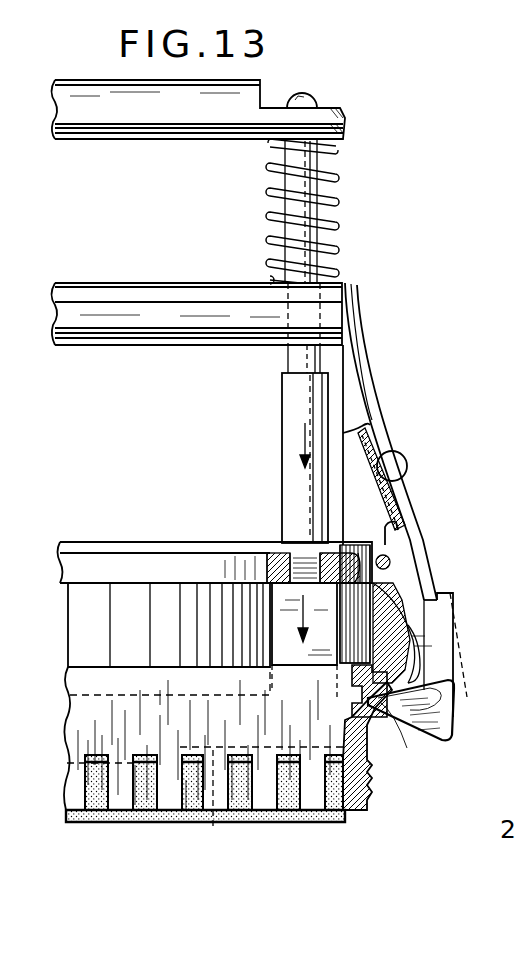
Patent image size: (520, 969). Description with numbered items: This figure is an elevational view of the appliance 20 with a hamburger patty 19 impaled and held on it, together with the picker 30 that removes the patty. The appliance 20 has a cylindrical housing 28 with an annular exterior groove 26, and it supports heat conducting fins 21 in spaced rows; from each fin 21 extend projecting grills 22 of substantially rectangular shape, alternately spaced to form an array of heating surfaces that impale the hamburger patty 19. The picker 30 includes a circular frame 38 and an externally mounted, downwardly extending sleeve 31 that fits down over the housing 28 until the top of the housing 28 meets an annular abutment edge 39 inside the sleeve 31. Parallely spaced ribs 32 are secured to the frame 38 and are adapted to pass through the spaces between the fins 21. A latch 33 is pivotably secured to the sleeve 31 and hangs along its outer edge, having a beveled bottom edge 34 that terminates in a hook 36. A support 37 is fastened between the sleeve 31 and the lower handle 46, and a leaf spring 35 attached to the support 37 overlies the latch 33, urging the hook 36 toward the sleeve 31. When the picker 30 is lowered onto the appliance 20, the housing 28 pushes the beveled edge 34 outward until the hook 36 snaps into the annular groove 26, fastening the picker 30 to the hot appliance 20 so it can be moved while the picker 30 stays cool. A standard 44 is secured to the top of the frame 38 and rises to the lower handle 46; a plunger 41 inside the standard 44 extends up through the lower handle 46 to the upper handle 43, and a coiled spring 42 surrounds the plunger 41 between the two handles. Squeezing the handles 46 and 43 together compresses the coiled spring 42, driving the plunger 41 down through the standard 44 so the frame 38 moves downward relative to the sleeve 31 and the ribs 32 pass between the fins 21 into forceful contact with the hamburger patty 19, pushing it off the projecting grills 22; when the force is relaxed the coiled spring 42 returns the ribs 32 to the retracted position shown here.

The upper handle 43 is at (262, 100).
The plunger 41 is at (320, 160).
The coiled spring 42 is at (337, 205).
The lower handle 46 is at (173, 310).
The support 37 is at (372, 375).
The standard 44 is at (288, 419).
The picker 30 is at (165, 540).
The circular frame 38 is at (210, 570).
The leaf spring 35 is at (420, 531).
The sleeve 31 is at (410, 584).
The annular abutment edge 39 is at (415, 649).
The latch 33 is at (453, 661).
The hook 36 is at (440, 689).
The beveled bottom edge 34 is at (420, 737).
The annular exterior groove 26 is at (372, 699).
The cylindrical housing 28 is at (378, 749).
The hamburger patty 19 is at (205, 813).
The projecting grills 22 is at (165, 798).
The ribs 32 is at (213, 832).
The heat conducting fins 21 is at (133, 687).
The appliance 20 is at (509, 771).